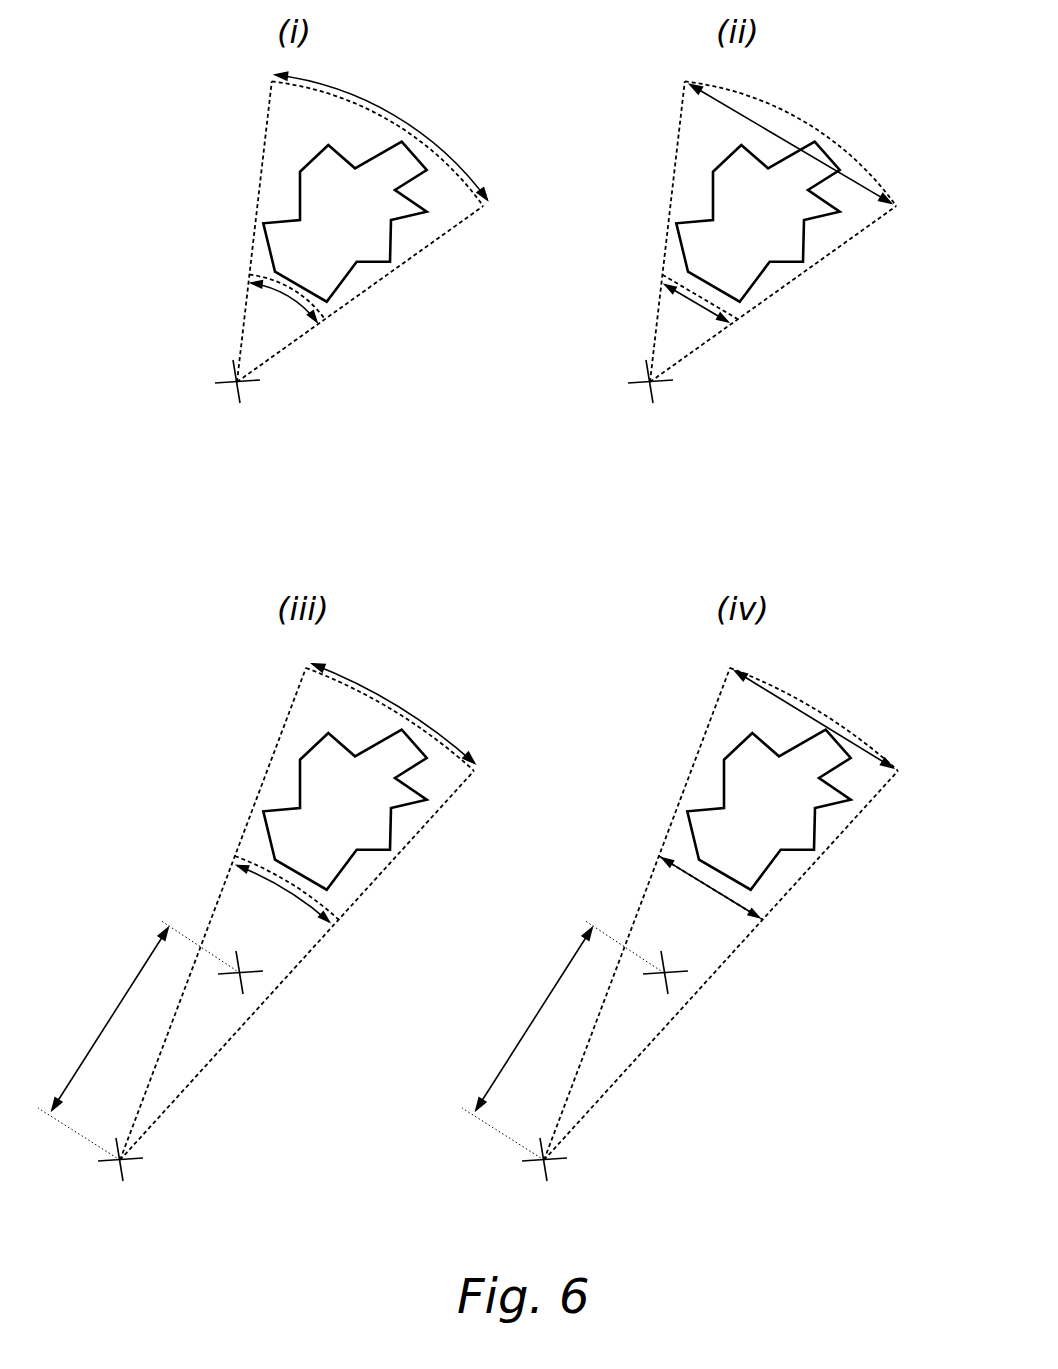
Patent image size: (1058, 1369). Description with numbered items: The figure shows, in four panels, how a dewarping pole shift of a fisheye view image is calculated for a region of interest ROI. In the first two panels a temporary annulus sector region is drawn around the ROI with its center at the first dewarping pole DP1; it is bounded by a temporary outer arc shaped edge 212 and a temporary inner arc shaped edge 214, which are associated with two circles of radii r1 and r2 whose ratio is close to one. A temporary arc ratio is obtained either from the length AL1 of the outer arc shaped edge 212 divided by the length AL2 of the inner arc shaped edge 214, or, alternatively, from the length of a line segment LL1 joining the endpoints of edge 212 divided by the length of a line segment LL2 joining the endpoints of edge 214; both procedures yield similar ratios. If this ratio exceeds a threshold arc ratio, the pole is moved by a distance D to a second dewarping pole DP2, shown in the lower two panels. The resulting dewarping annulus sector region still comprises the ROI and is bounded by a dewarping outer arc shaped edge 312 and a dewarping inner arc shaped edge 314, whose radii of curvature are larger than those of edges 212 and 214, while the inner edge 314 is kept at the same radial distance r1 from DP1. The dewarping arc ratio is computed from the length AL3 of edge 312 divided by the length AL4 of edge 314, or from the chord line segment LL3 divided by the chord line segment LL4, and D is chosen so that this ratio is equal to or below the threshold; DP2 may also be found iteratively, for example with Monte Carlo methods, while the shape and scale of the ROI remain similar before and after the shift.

The temporary outer arc shaped edge 212 is at (316, 100).
The temporary inner arc shaped edge 214 is at (258, 270).
The length of the temporary outer arc shaped edge AL1 is at (423, 134).
The length of the temporary inner arc shaped edge AL2 is at (297, 302).
The line segment joining the endpoints of the temporary outer arc shaped edge LL1 is at (855, 181).
The line segment joining the endpoints of the temporary inner arc shaped edge LL2 is at (710, 302).
The region of interest ROI is at (363, 233).
The first dewarping pole DP1 is at (226, 396).
The dewarping outer arc shaped edge 312 is at (336, 685).
The dewarping inner arc shaped edge 314 is at (258, 858).
The length of the dewarping outer arc shaped edge AL3 is at (423, 714).
The length of the dewarping inner arc shaped edge AL4 is at (297, 890).
The line segment joining the endpoints of the dewarping outer arc shaped edge LL3 is at (840, 727).
The line segment joining the endpoints of the dewarping inner arc shaped edge LL4 is at (721, 890).
The dewarping pole shift D is at (115, 1008).
The second dewarping pole DP2 is at (142, 1165).